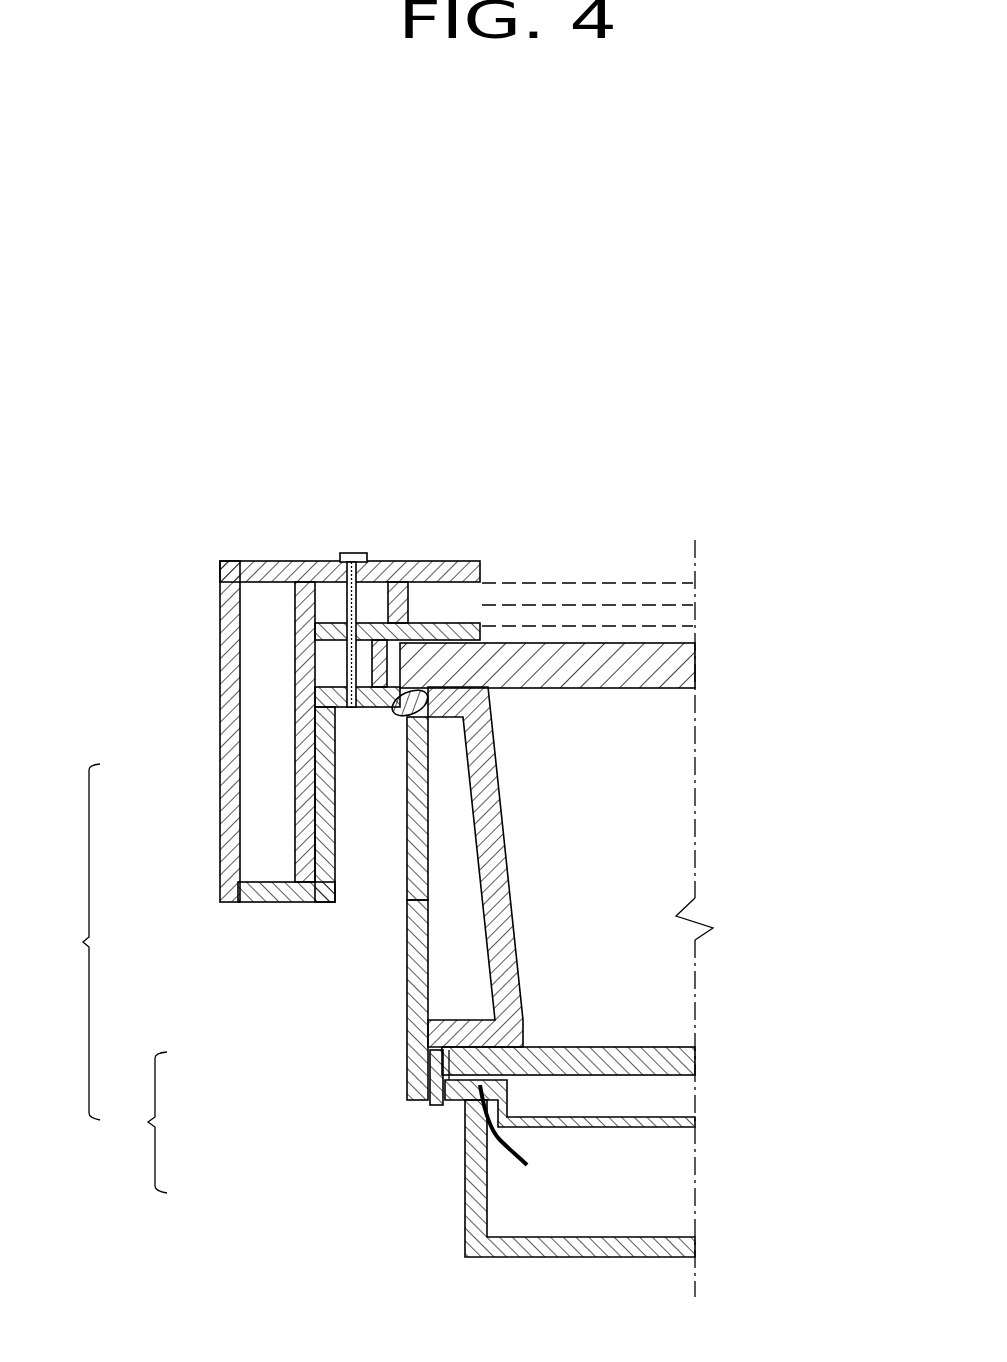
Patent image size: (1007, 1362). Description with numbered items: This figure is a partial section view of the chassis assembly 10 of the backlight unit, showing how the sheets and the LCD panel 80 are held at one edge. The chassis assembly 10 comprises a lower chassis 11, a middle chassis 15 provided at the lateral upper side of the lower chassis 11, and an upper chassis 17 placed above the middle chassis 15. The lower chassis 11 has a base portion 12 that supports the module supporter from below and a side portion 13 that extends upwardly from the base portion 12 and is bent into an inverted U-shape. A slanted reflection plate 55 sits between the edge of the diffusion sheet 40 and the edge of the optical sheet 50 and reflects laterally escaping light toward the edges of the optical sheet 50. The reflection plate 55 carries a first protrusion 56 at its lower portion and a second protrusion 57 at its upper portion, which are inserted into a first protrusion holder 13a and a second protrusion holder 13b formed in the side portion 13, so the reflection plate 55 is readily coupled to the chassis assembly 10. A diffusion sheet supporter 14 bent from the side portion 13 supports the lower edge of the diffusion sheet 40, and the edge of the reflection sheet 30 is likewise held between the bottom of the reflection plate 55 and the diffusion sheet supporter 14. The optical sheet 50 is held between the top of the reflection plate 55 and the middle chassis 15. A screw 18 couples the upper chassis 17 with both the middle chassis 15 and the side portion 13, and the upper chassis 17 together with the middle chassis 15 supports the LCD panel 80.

The chassis assembly 10 is at (74, 960).
The lower chassis 11 is at (139, 1140).
The base portion 12 is at (500, 1258).
The side portion 13 is at (300, 966).
The first protrusion holder 13a is at (412, 1102).
The second protrusion holder 13b is at (408, 752).
The diffusion sheet supporter 14 is at (529, 1140).
The middle chassis 15 is at (293, 878).
The upper chassis 17 is at (218, 767).
The screw 18 is at (347, 553).
The reflection sheet 30 is at (697, 1120).
The diffusion sheet 40 is at (697, 1060).
The optical sheet 50 is at (697, 668).
The reflection plate 55 is at (508, 875).
The first protrusion 56 is at (442, 1102).
The second protrusion 57 is at (392, 712).
The LCD panel 80 is at (588, 583).